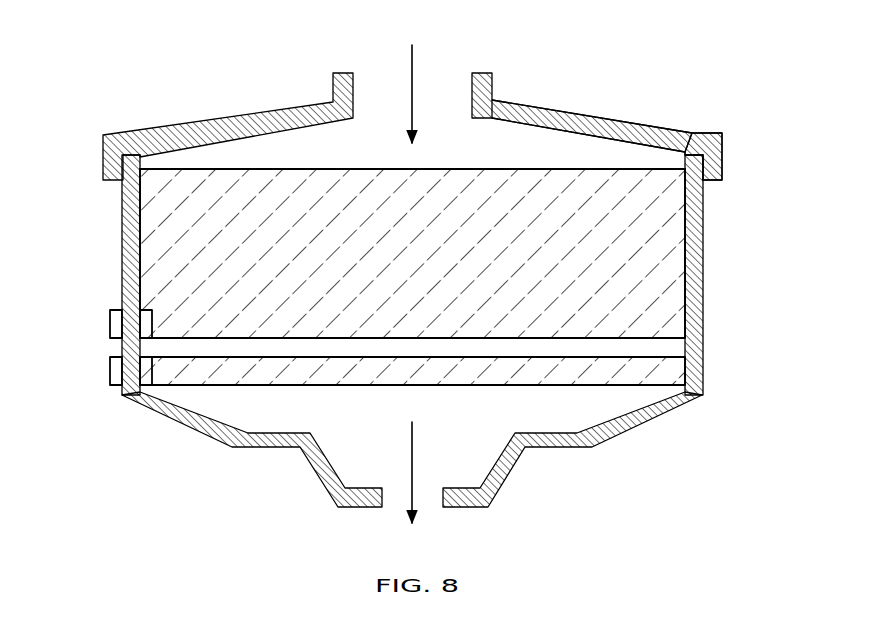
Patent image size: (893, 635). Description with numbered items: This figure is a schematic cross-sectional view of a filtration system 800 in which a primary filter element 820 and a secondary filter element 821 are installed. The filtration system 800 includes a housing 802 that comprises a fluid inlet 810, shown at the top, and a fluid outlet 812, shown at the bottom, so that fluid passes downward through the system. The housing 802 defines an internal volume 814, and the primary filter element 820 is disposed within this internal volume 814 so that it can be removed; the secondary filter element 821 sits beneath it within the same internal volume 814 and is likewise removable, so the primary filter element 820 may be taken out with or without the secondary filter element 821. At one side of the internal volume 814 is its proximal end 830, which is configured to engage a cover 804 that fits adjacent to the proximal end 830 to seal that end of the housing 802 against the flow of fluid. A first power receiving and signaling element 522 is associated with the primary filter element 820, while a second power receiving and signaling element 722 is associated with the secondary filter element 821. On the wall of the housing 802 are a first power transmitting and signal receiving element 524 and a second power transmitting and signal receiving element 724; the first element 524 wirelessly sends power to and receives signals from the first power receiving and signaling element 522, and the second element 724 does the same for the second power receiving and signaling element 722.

The filtration system 800 is at (590, 80).
The housing 802 is at (692, 310).
The cover 804 is at (630, 130).
The fluid inlet 810 is at (438, 98).
The fluid outlet 812 is at (391, 510).
The internal volume 814 is at (233, 157).
The primary filter element 820 is at (678, 248).
The secondary filter element 821 is at (675, 375).
The proximal end 830 is at (695, 152).
The first power receiving and signaling element 522 is at (130, 290).
The first power transmitting and signal receiving element 524 is at (115, 337).
The second power receiving and signaling element 722 is at (140, 352).
The second power transmitting and signal receiving element 724 is at (113, 383).